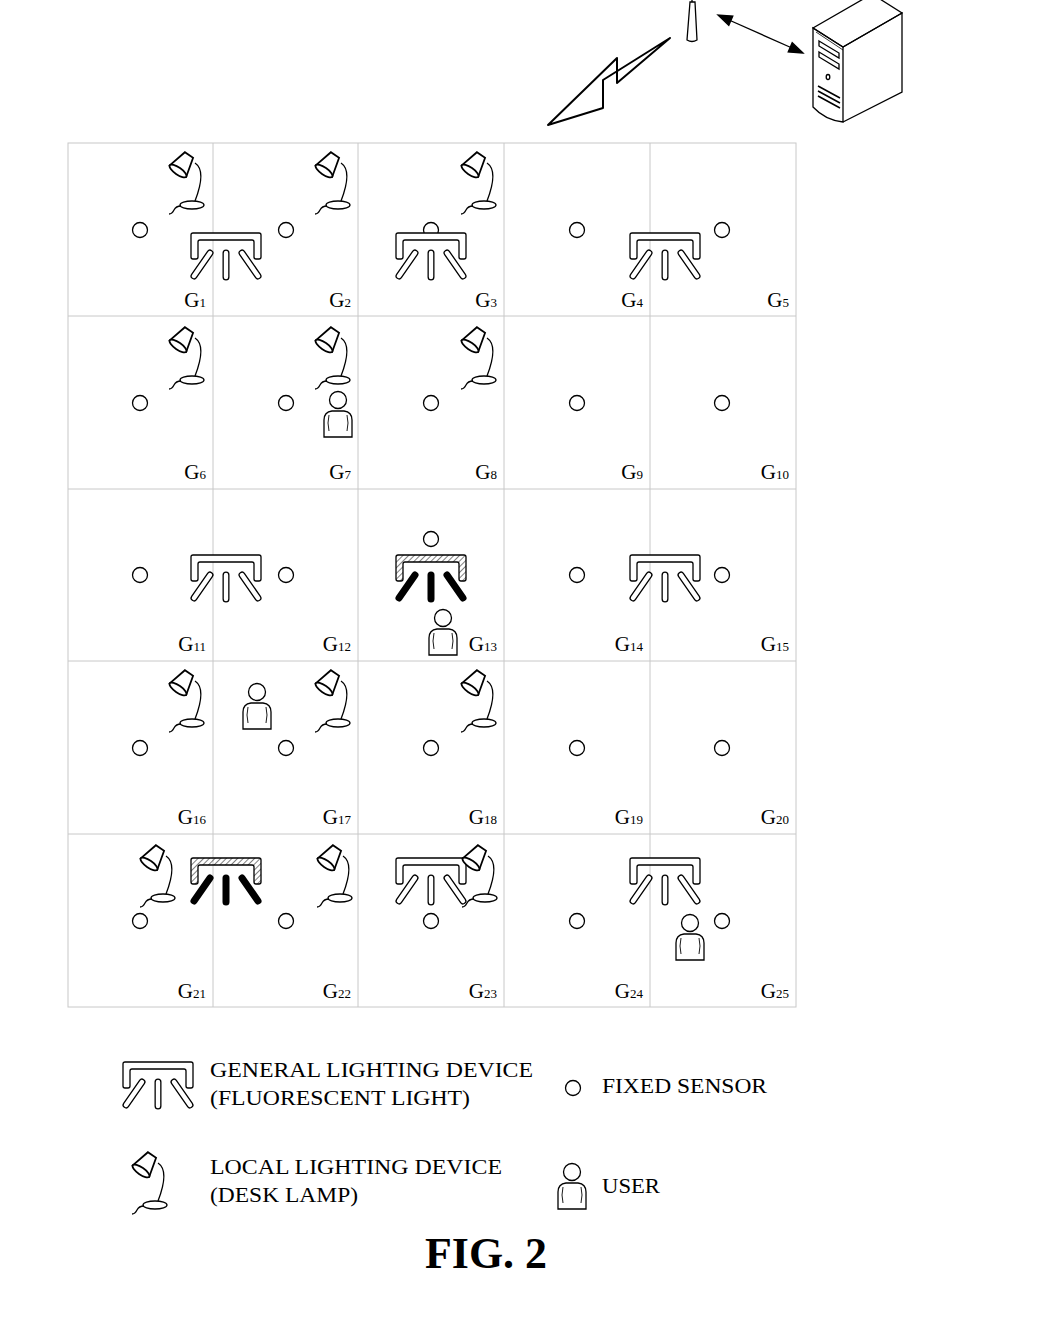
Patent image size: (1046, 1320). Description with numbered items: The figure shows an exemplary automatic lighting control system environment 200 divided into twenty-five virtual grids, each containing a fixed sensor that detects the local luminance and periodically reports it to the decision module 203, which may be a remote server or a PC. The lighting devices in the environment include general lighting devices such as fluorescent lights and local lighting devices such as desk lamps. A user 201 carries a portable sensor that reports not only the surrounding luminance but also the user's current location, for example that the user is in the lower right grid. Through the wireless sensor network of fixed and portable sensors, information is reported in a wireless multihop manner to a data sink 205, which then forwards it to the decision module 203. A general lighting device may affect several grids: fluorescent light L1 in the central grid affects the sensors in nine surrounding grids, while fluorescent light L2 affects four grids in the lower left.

The system environment 200 is at (196, 108).
The user 201 is at (690, 960).
The decision module 203 is at (872, 103).
The data sink 205 is at (686, 16).
The fluorescent light L1 is at (407, 556).
The fluorescent light L2 is at (233, 858).